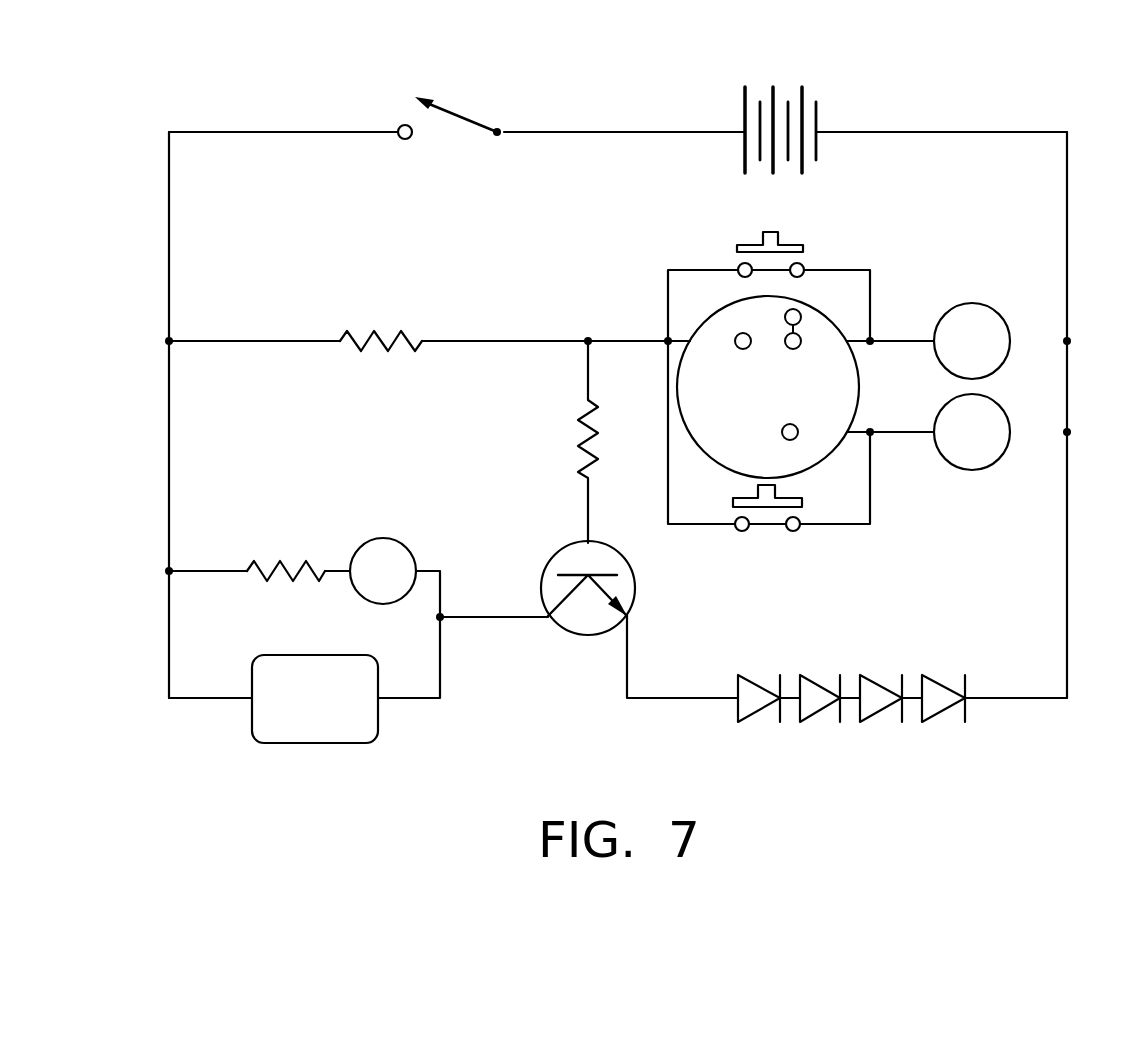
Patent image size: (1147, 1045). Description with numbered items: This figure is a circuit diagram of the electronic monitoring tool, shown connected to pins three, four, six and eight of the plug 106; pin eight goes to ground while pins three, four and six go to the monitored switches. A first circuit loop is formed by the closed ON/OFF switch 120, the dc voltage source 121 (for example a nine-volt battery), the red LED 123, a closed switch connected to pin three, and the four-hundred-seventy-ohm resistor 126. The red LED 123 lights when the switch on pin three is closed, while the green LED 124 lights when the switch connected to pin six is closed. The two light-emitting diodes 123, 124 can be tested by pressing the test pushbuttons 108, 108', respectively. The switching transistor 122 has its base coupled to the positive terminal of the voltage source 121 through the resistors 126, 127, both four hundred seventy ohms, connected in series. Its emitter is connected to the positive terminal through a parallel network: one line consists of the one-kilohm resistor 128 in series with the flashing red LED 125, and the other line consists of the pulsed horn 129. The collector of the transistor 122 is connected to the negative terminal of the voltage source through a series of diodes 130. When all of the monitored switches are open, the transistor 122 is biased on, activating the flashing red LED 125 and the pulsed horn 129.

The plug 106 is at (713, 466).
The test pushbutton 108 is at (833, 233).
The test pushbutton 108' is at (829, 539).
The ON/OFF switch 120 is at (465, 85).
The dc voltage source 121 is at (812, 72).
The switching transistor 122 is at (638, 587).
The red LED 123 is at (998, 308).
The green LED 124 is at (998, 400).
The flashing red LED 125 is at (396, 540).
The resistor 126 is at (383, 332).
The resistor 127 is at (583, 444).
The resistor 128 is at (268, 562).
The pulsed horn 129 is at (252, 724).
The diodes 130 is at (873, 666).